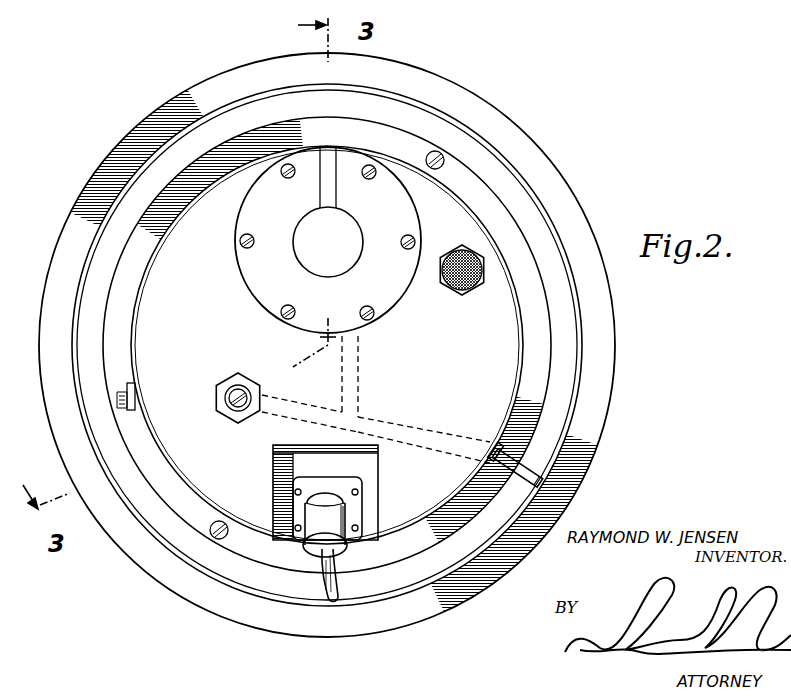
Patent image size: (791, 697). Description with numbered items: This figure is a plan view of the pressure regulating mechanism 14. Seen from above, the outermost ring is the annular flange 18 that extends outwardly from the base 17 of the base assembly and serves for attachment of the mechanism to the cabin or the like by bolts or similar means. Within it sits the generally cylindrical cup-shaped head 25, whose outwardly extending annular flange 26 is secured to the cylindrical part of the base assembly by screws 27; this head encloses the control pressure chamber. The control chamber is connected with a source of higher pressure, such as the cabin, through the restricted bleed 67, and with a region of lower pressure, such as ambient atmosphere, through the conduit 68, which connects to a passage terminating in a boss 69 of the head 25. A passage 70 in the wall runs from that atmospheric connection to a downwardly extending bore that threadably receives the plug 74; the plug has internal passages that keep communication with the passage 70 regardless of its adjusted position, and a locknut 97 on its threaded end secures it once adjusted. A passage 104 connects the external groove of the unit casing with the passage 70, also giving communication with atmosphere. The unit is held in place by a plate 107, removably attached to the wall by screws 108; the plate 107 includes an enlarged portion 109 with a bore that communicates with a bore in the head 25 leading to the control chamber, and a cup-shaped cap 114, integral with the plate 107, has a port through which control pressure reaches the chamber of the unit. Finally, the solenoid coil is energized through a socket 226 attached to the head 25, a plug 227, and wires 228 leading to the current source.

The pressure regulating mechanism 14 is at (650, 356).
The base 17 is at (525, 202).
The annular flange 18 is at (582, 208).
The cup-shaped head 25 is at (517, 329).
The annular flange 26 is at (463, 177).
The screws 27 is at (442, 151).
The restricted bleed 67 is at (462, 294).
The conduit 68 is at (541, 478).
The boss 69 is at (503, 446).
The passage 70 is at (411, 426).
The plug 74 is at (211, 420).
The locknut 97 is at (240, 418).
The passage 104 is at (357, 375).
The plate 107 is at (396, 220).
The screws 108 is at (287, 311).
The enlarged portion 109 is at (320, 189).
The cup-shaped cap 114 is at (347, 254).
The socket 226 is at (340, 500).
The plug 227 is at (345, 518).
The wires 228 is at (333, 583).